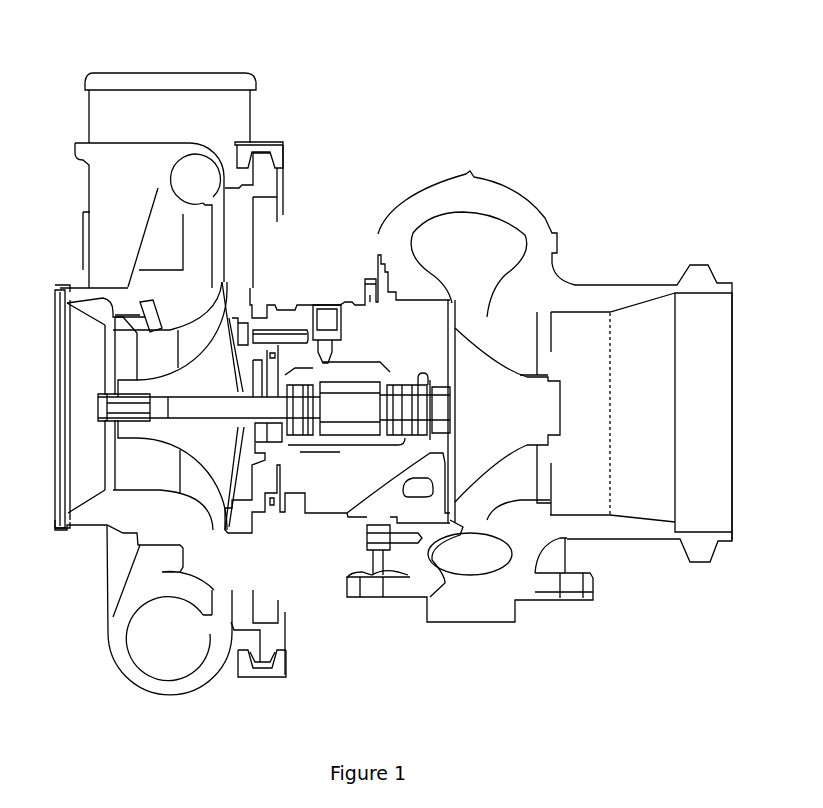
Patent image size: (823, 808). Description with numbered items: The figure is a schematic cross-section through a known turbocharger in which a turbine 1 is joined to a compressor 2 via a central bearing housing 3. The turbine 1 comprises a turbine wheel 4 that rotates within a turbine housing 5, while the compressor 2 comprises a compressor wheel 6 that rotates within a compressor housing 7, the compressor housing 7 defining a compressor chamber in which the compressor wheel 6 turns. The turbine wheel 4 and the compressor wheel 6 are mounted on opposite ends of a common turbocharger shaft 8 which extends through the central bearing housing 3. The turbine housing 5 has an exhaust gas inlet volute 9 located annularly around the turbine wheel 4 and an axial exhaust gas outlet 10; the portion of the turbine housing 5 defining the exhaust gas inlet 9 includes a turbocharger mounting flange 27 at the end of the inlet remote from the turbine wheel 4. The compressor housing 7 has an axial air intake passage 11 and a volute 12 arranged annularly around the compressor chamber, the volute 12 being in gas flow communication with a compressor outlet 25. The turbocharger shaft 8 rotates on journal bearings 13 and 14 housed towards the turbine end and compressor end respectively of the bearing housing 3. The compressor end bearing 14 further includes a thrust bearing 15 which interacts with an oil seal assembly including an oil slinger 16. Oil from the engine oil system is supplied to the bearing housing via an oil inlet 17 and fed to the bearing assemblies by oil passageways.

The turbine 1 is at (662, 249).
The compressor 2 is at (76, 578).
The central bearing housing 3 is at (292, 305).
The turbine wheel 4 is at (476, 455).
The turbine housing 5 is at (657, 532).
The compressor wheel 6 is at (157, 427).
The compressor housing 7 is at (135, 268).
The turbocharger shaft 8 is at (343, 412).
The exhaust gas inlet volute 9 is at (478, 228).
The axial exhaust gas outlet 10 is at (658, 388).
The axial air intake passage 11 is at (73, 373).
The volute 12 is at (207, 172).
The journal bearing 13 is at (390, 390).
The journal bearing 14 is at (287, 355).
The thrust bearing 15 is at (258, 327).
The oil slinger 16 is at (257, 428).
The oil inlet 17 is at (333, 315).
The compressor outlet 25 is at (162, 72).
The turbocharger mounting flange 27 is at (538, 587).